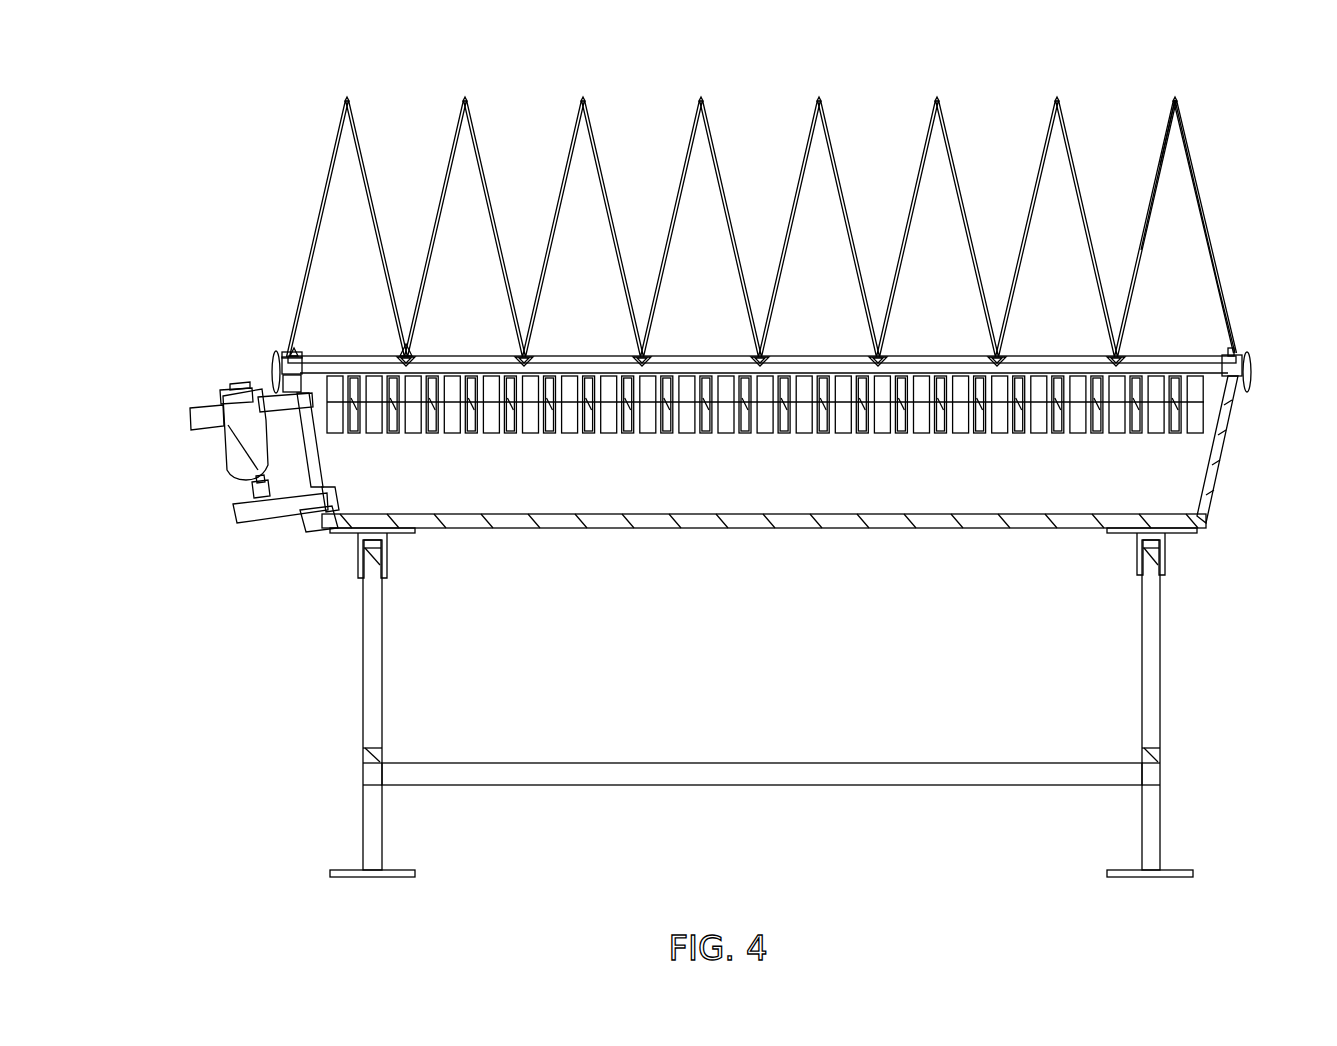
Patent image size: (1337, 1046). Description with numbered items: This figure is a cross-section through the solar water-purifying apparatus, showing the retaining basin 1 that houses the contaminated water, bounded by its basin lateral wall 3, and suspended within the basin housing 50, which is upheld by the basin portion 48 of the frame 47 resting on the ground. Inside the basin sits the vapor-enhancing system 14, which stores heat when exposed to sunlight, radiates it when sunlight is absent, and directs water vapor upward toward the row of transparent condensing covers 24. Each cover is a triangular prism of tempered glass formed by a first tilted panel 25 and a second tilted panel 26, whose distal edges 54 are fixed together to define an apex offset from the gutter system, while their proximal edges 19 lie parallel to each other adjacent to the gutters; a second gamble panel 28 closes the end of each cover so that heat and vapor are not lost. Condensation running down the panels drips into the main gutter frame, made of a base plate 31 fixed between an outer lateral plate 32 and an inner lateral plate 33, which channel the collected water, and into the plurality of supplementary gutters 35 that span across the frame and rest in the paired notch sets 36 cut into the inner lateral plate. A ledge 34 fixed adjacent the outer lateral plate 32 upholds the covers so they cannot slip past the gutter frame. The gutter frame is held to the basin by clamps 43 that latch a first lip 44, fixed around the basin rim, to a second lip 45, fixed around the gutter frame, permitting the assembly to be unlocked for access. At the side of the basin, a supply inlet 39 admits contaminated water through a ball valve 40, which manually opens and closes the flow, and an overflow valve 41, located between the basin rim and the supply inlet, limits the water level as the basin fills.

The retaining basin 1 is at (803, 477).
The basin lateral wall 3 is at (320, 450).
The vapor-enhancing system 14 is at (1214, 408).
The proximal edge 19 is at (1120, 343).
The transparent condensing cover 24 is at (614, 172).
The first tilted panel 25 is at (1163, 135).
The second tilted panel 26 is at (1211, 231).
The second gamble panel 28 is at (1205, 300).
The base plate 31 is at (313, 373).
The outer lateral plate 32 is at (283, 362).
The inner lateral plate 33 is at (302, 358).
The ledge 34 is at (298, 355).
The supplementary gutter 35 is at (534, 358).
The paired notch set 36 is at (414, 362).
The supply inlet 39 is at (300, 525).
The ball valve 40 is at (257, 523).
The overflow valve 41 is at (232, 470).
The clamp 43 is at (273, 393).
The first lip 44 is at (279, 380).
The second lip 45 is at (277, 352).
The frame 47 is at (1167, 669).
The basin portion 48 is at (1147, 606).
The basin housing 50 is at (546, 525).
The distal edge 54 is at (1174, 96).